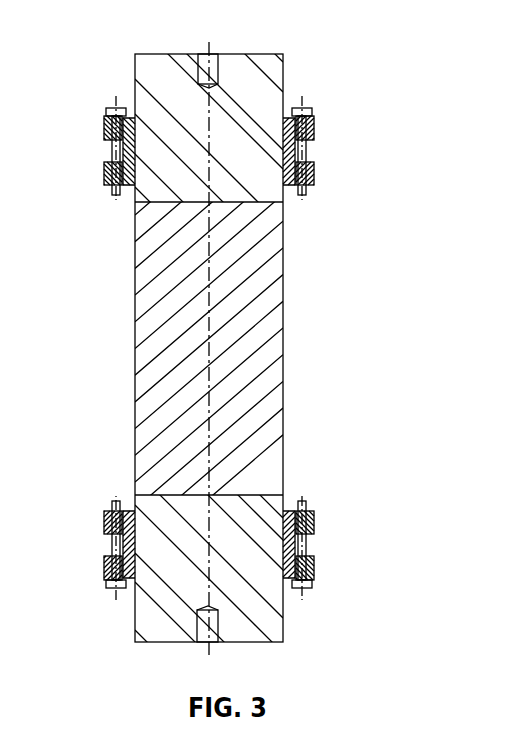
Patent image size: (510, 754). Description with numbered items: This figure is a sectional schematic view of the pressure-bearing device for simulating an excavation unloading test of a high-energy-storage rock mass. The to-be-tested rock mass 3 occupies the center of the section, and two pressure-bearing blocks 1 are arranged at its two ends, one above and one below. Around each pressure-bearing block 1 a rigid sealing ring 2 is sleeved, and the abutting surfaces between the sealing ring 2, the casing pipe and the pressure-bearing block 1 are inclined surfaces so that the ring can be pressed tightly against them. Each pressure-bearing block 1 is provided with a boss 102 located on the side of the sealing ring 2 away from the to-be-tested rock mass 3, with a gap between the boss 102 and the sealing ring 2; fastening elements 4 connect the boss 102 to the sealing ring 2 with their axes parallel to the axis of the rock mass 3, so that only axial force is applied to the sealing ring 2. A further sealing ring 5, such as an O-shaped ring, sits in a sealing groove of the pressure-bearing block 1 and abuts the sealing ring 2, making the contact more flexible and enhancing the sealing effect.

The pressure-bearing block 1 is at (160, 167).
The boss 102 is at (86, 123).
The sealing ring 2 is at (81, 158).
The to-be-tested rock mass 3 is at (160, 311).
The fastening element 4 is at (354, 514).
The sealing ring 5 is at (350, 465).